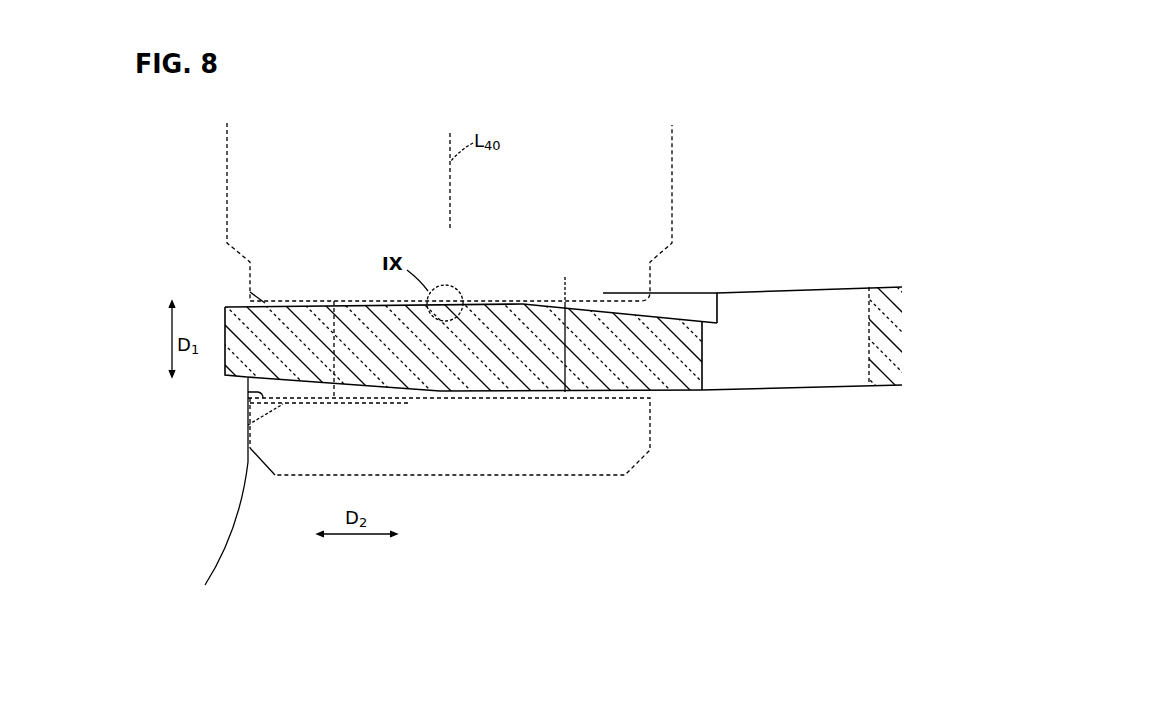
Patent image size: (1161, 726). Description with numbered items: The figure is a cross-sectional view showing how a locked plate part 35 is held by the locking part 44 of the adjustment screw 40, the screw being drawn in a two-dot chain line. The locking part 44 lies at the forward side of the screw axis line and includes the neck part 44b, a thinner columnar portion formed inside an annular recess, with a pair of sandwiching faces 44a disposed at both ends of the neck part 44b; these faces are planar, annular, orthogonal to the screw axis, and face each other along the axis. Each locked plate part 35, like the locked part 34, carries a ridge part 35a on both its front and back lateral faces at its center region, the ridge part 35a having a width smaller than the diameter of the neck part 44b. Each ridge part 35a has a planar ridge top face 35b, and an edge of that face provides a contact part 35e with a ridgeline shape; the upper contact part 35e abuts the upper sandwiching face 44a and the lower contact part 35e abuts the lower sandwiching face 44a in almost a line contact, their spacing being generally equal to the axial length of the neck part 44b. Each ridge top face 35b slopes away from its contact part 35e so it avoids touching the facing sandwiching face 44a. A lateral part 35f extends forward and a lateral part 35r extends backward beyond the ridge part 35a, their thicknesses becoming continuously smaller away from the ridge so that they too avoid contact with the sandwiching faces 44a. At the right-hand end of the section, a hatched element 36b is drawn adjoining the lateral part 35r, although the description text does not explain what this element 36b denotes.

The locked part 34 is at (292, 306).
The locked plate part 35 is at (328, 306).
The ridge part 35a is at (483, 303).
The ridge top face 35b is at (498, 306).
The contact part 35e is at (445, 300).
The lateral part 35f is at (250, 424).
The lateral part 35r is at (678, 318).
The wall portion 36b is at (866, 296).
The adjustment screw 40 is at (676, 160).
The locking part 44 is at (640, 301).
The sandwiching face 44a is at (250, 292).
The neck part 44b is at (582, 327).